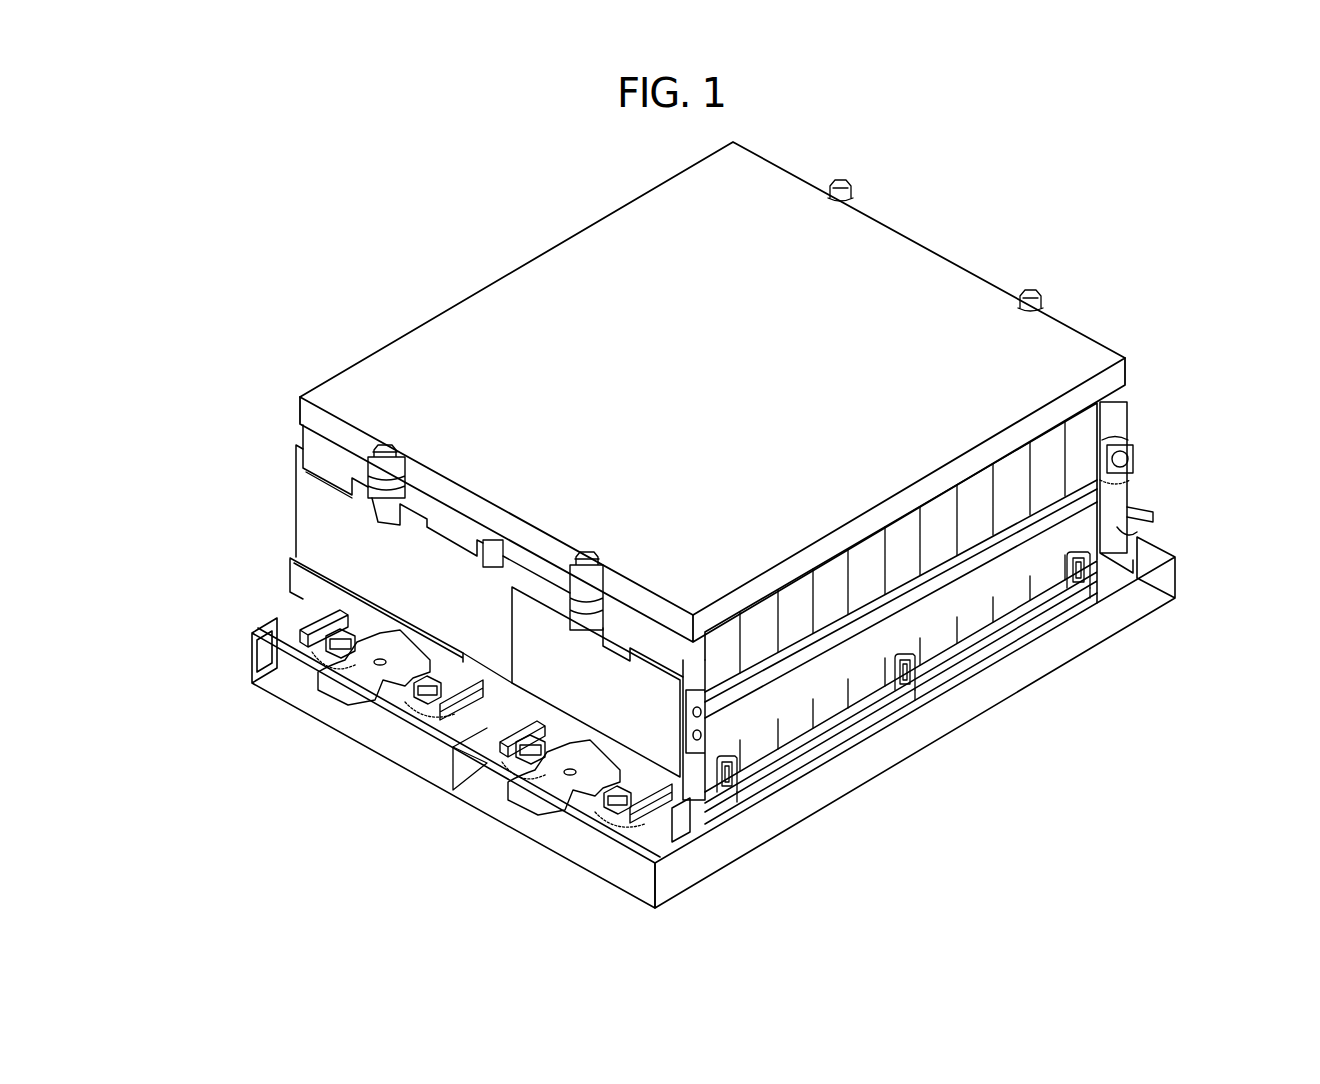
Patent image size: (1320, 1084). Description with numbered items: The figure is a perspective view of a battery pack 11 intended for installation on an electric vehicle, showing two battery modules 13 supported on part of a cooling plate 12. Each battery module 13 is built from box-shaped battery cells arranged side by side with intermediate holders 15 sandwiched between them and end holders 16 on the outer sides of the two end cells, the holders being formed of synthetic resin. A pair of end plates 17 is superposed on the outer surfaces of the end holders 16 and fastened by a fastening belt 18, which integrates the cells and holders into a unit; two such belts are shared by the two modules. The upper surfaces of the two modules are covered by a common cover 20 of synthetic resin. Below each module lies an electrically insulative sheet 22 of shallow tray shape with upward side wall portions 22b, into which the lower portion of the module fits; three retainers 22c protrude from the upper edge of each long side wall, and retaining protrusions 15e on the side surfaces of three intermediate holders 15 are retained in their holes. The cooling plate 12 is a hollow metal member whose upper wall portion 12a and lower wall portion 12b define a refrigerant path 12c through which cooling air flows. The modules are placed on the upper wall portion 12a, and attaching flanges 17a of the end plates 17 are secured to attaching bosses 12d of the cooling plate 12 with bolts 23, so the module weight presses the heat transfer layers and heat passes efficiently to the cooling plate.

The battery pack 11 is at (505, 243).
The cooling plate 12 is at (1018, 707).
The upper wall portion 12a is at (660, 840).
The lower wall portion 12b is at (410, 752).
The refrigerant path 12c is at (523, 817).
The attaching boss 12d is at (358, 695).
The battery module 13 is at (293, 430).
The intermediate holder 15 is at (783, 600).
The retaining protrusion 15e is at (728, 792).
The end holder 16 is at (333, 458).
The end plate 17 is at (441, 545).
The attaching flange 17a is at (332, 660).
The fastening belt 18 is at (833, 636).
The cover 20 is at (913, 265).
The electrically insulative sheet 22 is at (830, 752).
The side wall portion 22b is at (1030, 625).
The retainer 22c is at (737, 797).
The bolt 23 is at (428, 682).